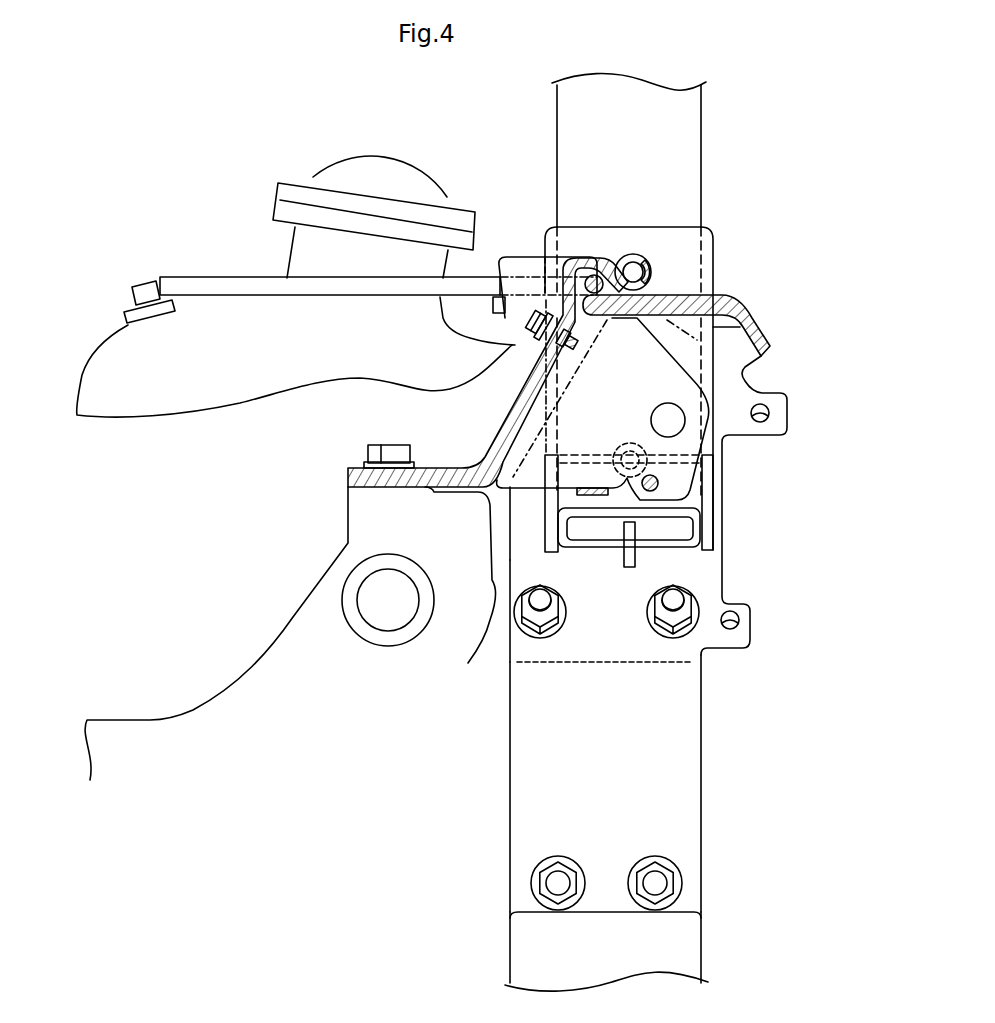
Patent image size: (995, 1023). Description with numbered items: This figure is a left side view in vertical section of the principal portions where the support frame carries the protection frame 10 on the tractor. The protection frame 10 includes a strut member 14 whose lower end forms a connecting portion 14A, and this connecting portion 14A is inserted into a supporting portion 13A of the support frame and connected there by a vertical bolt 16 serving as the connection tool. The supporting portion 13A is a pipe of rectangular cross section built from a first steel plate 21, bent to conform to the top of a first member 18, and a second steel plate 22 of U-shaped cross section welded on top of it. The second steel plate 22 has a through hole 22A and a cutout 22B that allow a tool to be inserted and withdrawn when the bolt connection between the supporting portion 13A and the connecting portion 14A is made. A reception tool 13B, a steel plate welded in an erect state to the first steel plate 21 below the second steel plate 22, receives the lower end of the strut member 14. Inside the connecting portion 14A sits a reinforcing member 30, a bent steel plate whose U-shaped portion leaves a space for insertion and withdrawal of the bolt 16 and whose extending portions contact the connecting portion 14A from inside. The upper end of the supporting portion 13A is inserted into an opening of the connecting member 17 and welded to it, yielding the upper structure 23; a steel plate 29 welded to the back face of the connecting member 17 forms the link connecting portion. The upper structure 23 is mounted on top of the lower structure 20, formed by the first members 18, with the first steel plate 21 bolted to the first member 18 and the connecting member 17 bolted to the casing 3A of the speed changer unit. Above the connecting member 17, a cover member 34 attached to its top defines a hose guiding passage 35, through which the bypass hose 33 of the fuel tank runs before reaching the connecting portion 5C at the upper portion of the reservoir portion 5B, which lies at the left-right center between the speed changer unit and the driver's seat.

The protection frame 10 is at (705, 121).
The strut member 14 is at (703, 190).
The connecting portion 14A is at (678, 515).
The vertical bolt 16 is at (617, 255).
The connecting member 17 is at (683, 298).
The steel plate 29 is at (690, 440).
The first member 18 is at (703, 943).
The lower structure 20 is at (508, 929).
The upper structure 23 is at (508, 748).
The supporting portion 13A is at (432, 498).
The reception tool 13B is at (623, 572).
The first steel plate 21 is at (509, 506).
The second steel plate 22 is at (510, 540).
The through hole 22A is at (652, 254).
The cutout 22B is at (617, 517).
The reinforcing member 30 is at (640, 524).
The bypass hose 33 is at (203, 276).
The cover member 34 is at (516, 255).
The hose guiding passage 35 is at (592, 270).
The casing 3A is at (157, 720).
The reservoir portion 5B is at (97, 352).
The connecting portion 5C is at (138, 283).